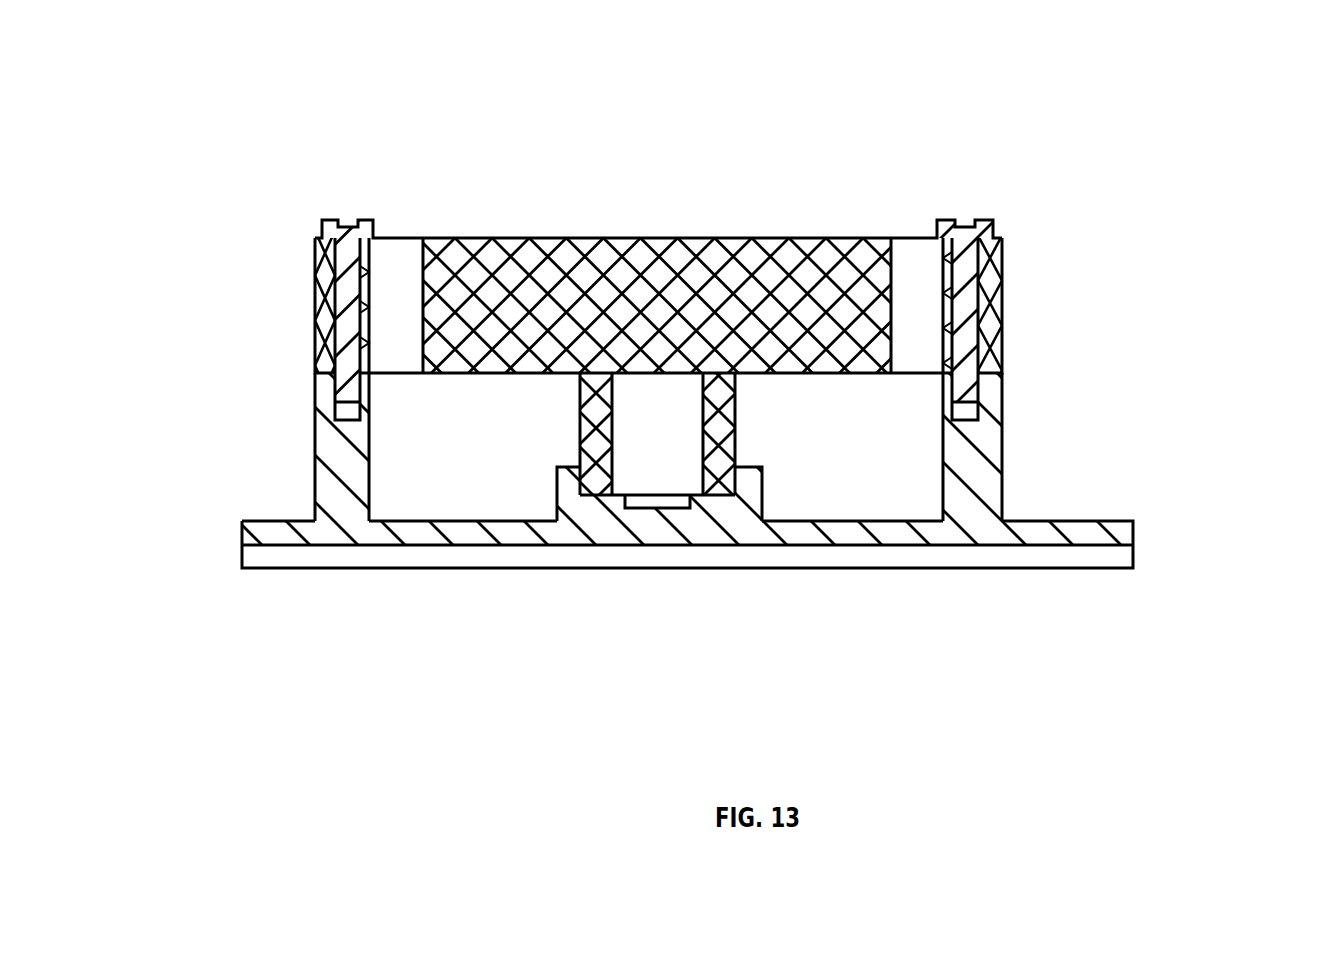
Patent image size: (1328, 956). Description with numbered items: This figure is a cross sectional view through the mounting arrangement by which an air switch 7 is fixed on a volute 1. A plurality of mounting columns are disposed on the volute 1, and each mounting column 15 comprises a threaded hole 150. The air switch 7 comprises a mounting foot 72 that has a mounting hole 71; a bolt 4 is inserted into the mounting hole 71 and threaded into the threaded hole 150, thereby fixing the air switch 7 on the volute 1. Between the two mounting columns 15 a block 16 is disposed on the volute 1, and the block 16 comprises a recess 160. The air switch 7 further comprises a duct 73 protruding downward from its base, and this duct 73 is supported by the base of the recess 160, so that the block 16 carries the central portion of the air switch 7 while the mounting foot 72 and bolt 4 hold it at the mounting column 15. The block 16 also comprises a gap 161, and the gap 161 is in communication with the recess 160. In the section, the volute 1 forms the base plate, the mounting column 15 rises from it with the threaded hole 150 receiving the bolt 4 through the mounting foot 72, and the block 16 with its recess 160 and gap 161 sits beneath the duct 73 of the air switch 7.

The volute 1 is at (300, 534).
The mounting column 15 is at (342, 452).
The threaded hole 150 is at (965, 411).
The block 16 is at (568, 495).
The recess 160 is at (737, 486).
The gap 161 is at (655, 508).
The bolt 4 is at (967, 316).
The air switch 7 is at (648, 292).
The mounting hole 71 is at (998, 246).
The mounting foot 72 is at (316, 304).
The duct 73 is at (730, 413).